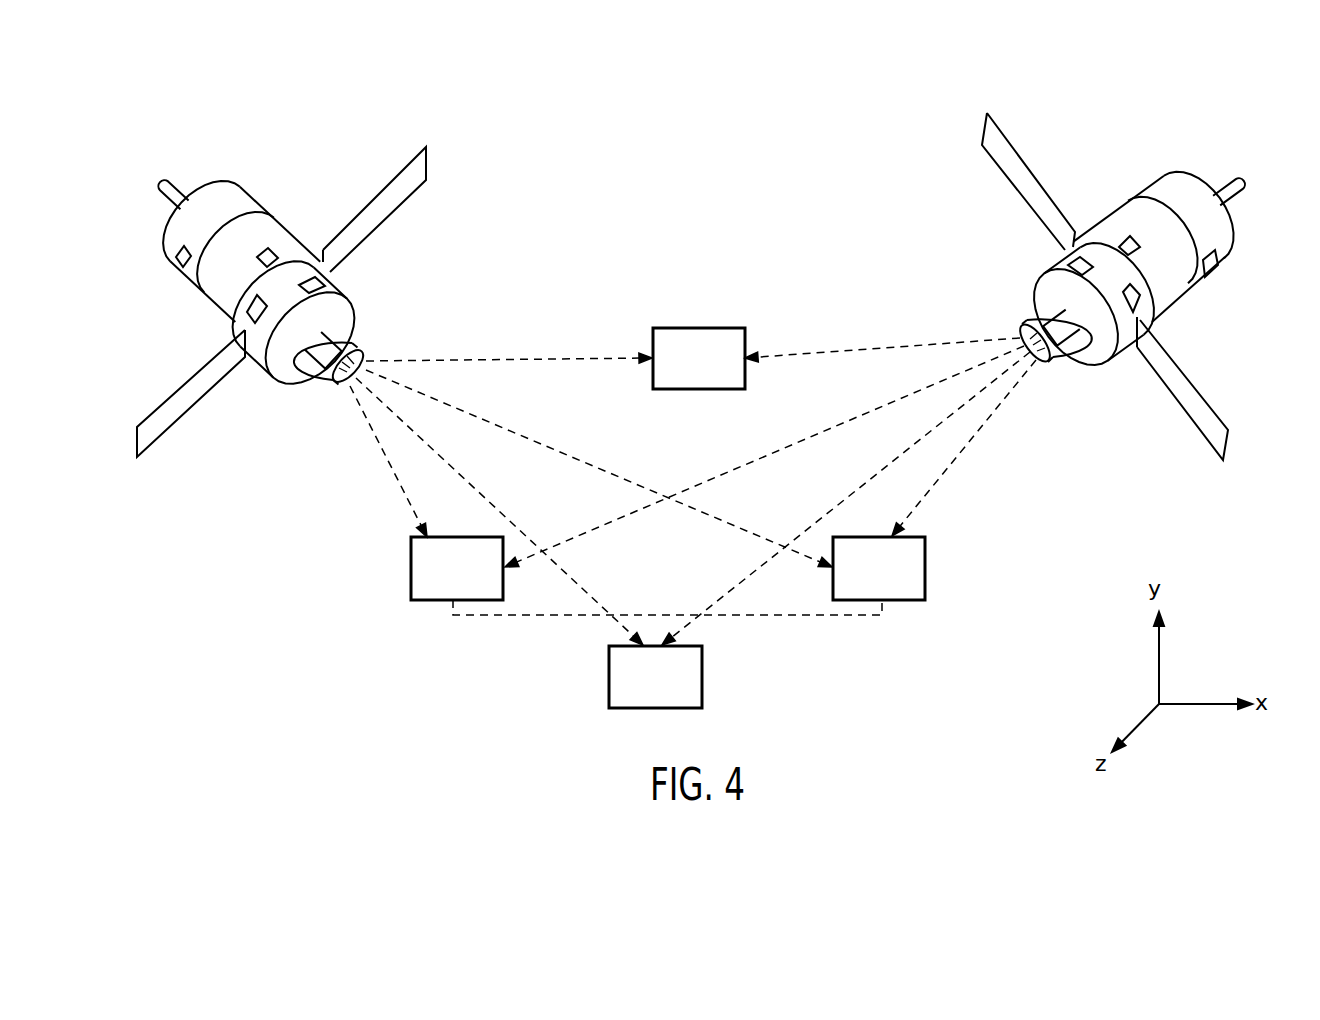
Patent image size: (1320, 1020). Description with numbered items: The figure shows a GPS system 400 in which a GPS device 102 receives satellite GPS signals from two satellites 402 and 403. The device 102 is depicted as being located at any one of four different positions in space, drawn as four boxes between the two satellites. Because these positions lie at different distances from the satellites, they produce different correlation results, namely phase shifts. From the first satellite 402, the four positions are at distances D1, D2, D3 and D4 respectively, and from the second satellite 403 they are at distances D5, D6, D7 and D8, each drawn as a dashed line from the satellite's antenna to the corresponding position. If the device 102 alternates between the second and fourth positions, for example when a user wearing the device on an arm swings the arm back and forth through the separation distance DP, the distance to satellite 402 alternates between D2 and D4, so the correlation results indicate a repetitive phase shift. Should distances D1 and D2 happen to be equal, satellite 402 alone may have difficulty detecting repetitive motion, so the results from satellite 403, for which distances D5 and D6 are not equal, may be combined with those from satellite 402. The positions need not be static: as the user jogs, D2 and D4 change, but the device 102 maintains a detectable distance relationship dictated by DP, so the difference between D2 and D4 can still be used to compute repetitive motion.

The GPS system 400 is at (666, 87).
The satellite 402 is at (1183, 183).
The satellite 403 is at (228, 184).
The GPS device 102 is at (697, 327).
The distance D1 is at (882, 339).
The distance D2 is at (964, 448).
The distance D3 is at (846, 498).
The distance D4 is at (764, 456).
The distance D5 is at (509, 347).
The distance D6 is at (599, 468).
The distance D7 is at (499, 511).
The distance D8 is at (388, 461).
The distance DP is at (667, 600).